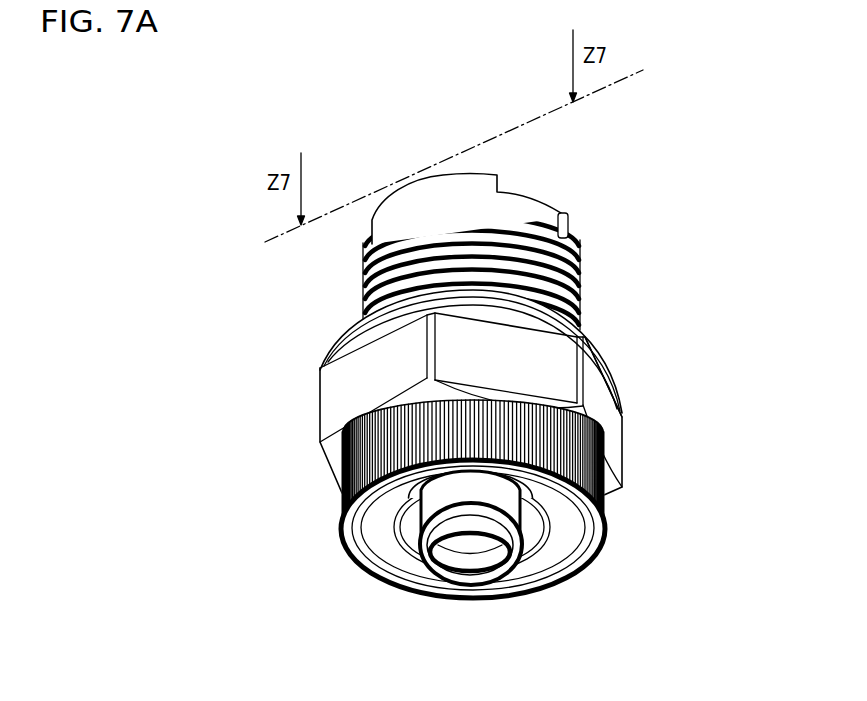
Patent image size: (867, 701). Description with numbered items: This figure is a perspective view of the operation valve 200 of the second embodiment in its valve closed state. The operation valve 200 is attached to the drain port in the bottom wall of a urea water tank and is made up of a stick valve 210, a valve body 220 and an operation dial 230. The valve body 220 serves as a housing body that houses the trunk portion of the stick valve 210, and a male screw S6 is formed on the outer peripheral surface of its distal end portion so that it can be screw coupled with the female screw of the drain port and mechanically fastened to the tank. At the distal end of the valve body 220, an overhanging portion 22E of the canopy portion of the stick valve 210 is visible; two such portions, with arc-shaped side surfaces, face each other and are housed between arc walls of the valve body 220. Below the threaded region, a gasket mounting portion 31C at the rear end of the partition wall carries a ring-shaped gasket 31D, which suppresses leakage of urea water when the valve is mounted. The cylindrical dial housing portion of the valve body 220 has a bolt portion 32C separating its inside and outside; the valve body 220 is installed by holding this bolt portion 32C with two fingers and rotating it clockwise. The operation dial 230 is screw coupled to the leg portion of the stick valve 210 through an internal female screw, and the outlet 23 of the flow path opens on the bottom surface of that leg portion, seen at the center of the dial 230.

The operation valve 200 is at (633, 228).
The male screw S6 is at (363, 270).
The overhanging portion 22E is at (523, 207).
The gasket 31D is at (585, 322).
The gasket mounting portion 31C is at (340, 347).
The valve body 220 is at (347, 387).
The bolt portion 32C is at (605, 423).
The operation dial 230 is at (342, 545).
The stick valve 210 is at (522, 558).
The outlet 23 is at (462, 565).